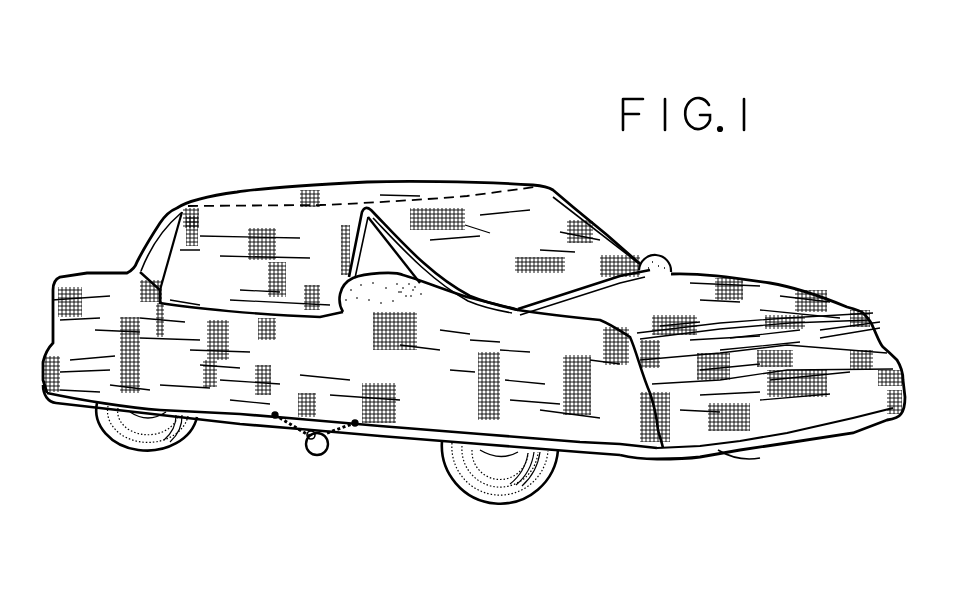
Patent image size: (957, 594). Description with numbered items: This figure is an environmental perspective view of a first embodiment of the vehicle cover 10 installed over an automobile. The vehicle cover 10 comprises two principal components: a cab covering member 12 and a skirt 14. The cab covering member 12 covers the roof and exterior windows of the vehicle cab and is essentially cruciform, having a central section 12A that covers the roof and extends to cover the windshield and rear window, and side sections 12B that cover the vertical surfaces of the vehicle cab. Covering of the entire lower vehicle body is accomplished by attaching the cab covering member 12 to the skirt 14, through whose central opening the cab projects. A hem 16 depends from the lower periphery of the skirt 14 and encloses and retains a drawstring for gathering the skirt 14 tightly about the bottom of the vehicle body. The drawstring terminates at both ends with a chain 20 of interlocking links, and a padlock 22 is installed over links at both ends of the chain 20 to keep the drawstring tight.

The vehicle cover 10 is at (519, 104).
The cab covering member 12 is at (400, 190).
The central section 12A is at (493, 269).
The side sections 12B is at (237, 283).
The skirt 14 is at (100, 377).
The hem 16 is at (217, 417).
The chain 20 is at (290, 430).
The padlock 22 is at (313, 452).